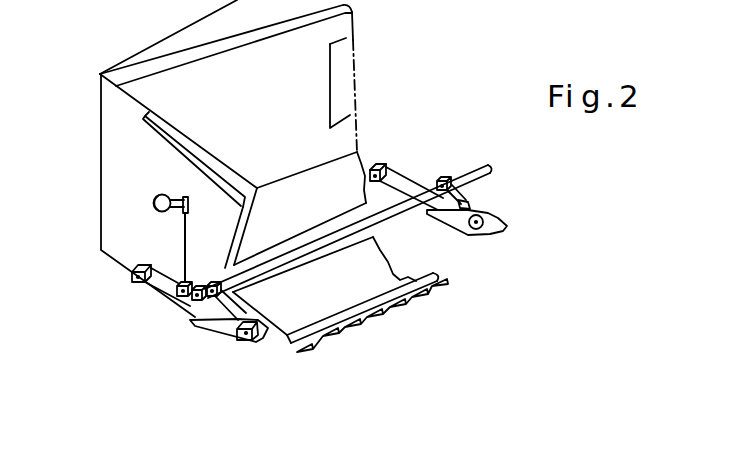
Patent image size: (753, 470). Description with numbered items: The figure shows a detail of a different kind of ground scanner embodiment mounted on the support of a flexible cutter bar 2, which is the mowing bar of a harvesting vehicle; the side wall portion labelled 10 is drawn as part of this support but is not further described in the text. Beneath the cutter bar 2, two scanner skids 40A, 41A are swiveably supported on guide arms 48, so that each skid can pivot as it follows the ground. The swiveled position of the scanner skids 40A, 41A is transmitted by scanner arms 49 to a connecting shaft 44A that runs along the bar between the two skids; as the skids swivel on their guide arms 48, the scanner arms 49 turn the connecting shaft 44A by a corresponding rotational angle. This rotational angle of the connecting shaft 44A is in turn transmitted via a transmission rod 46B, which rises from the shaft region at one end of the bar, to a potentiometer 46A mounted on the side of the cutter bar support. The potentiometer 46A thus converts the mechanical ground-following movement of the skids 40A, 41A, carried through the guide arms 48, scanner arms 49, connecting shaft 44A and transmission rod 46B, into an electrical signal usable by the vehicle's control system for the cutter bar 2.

The flexible cutter bar 2 is at (170, 47).
The side wall 10 is at (123, 146).
The scanner skid 40A is at (221, 328).
The scanner skid 41A is at (460, 228).
The connecting shaft 44A is at (428, 213).
The potentiometer 46A is at (154, 197).
The transmission rod 46B is at (184, 246).
The guide arm 48 is at (153, 299).
The scanner arm 49 is at (203, 309).